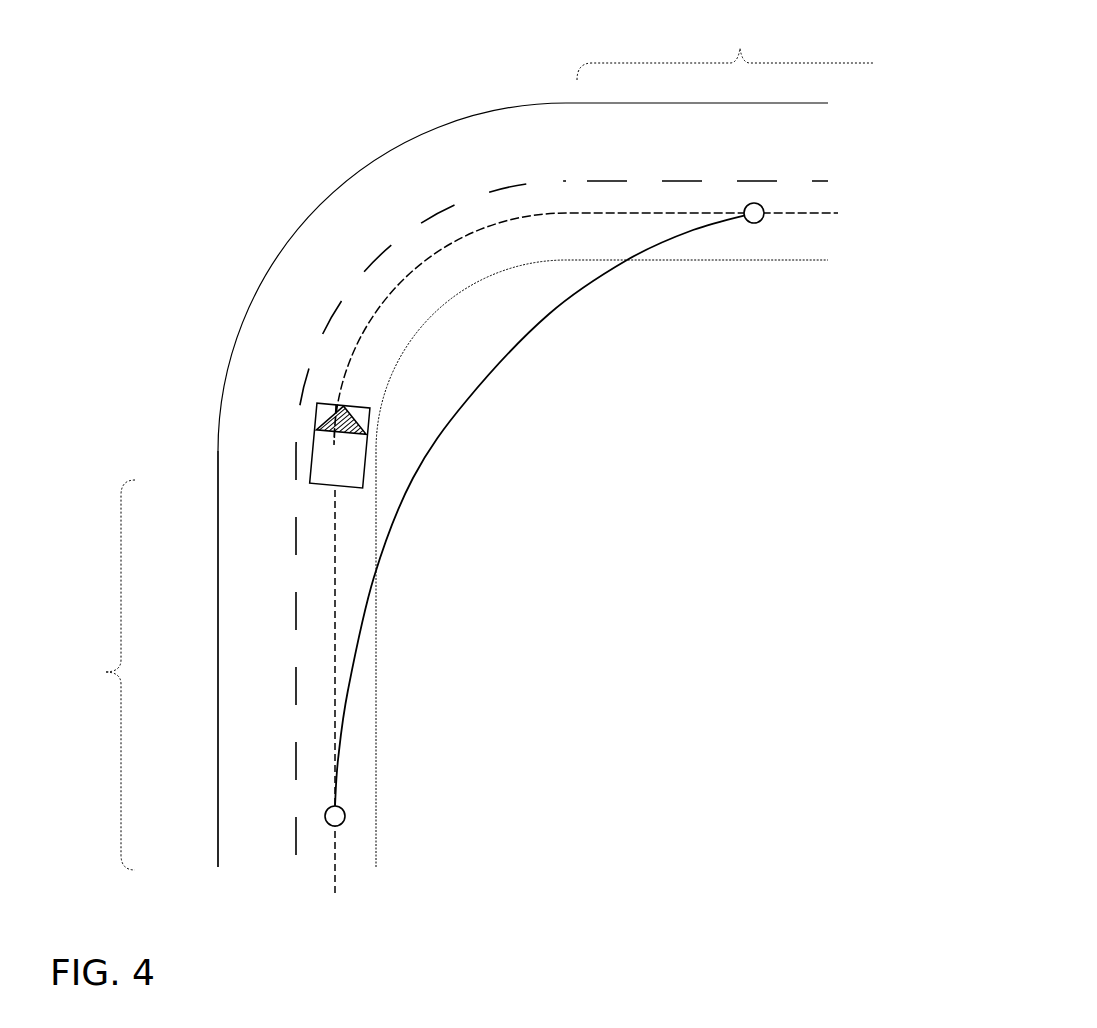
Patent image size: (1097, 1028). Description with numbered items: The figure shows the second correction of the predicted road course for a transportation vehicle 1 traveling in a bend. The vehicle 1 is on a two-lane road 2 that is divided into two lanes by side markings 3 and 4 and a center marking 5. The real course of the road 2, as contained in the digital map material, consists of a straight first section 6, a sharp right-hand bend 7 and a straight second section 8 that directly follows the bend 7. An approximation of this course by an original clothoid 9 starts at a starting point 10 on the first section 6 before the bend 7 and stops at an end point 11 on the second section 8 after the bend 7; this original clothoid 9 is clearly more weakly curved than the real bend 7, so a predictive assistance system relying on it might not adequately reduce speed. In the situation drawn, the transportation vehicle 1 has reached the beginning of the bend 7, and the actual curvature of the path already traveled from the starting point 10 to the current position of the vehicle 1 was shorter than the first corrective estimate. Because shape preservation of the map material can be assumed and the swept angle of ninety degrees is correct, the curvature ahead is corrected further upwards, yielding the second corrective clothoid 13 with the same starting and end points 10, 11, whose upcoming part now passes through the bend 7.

The transportation vehicle 1 is at (365, 457).
The road 2 is at (257, 758).
The side marking 3 is at (218, 703).
The side marking 4 is at (383, 672).
The center marking 5 is at (296, 645).
The first section 6 is at (107, 675).
The bend 7 is at (304, 159).
The second section 8 is at (725, 48).
The original clothoid 9 is at (549, 314).
The starting point 10 is at (345, 816).
The end point 11 is at (755, 226).
The second corrective clothoid 13 is at (365, 328).